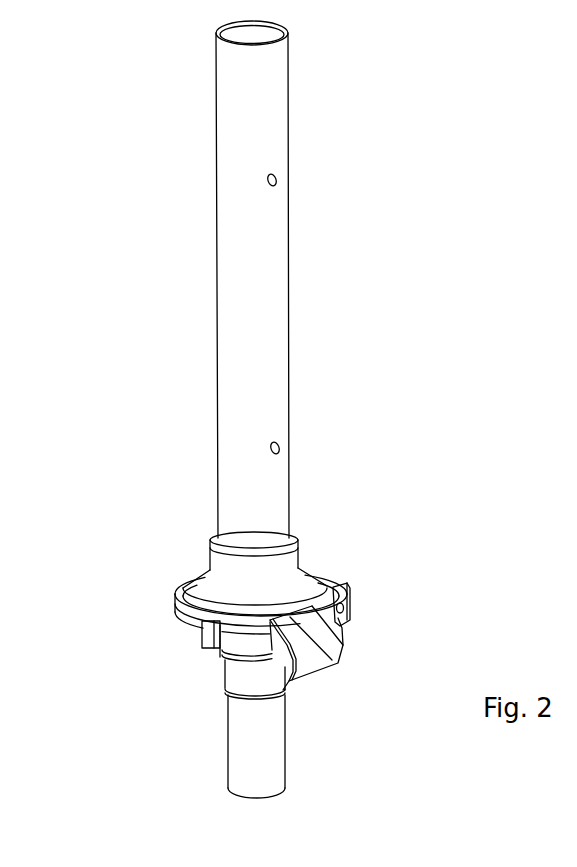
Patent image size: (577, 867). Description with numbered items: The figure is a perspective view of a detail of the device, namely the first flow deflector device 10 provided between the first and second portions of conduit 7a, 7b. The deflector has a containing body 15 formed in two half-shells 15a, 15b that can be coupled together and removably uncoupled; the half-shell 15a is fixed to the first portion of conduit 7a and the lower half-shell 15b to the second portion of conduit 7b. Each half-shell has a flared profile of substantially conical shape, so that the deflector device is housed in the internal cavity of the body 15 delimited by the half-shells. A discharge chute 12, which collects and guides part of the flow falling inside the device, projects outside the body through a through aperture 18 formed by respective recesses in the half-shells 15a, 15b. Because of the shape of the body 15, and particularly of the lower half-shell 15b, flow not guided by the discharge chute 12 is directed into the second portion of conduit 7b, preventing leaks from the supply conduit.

The first portion of conduit 7a is at (272, 357).
The second portion of conduit 7b is at (263, 774).
The first flow deflector device 10 is at (371, 525).
The discharge chute 12 is at (369, 642).
The containing body 15 is at (158, 616).
The half-shell 15a is at (192, 588).
The lower half-shell 15b is at (198, 646).
The through aperture 18 is at (342, 617).